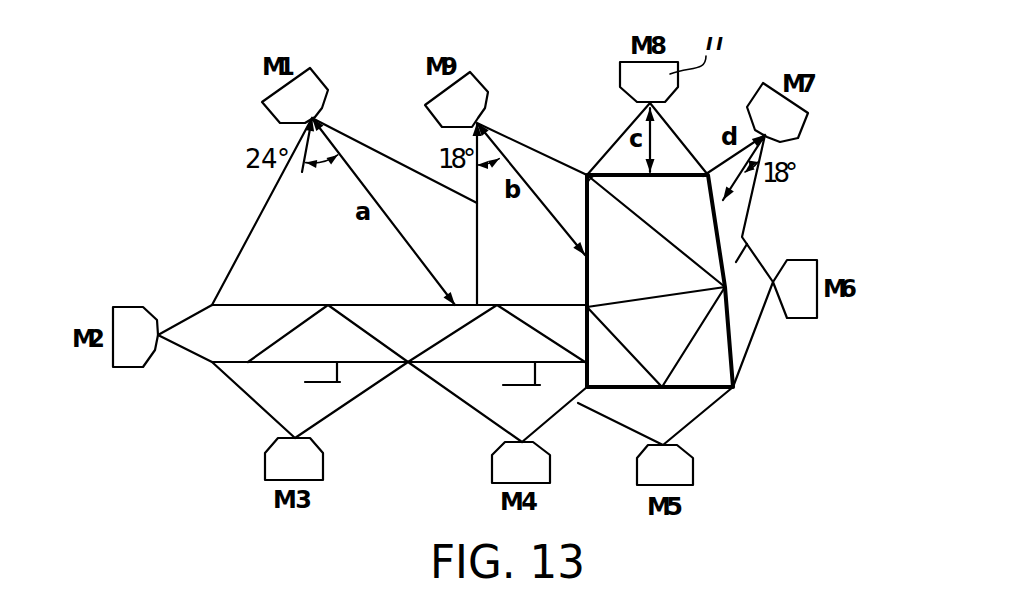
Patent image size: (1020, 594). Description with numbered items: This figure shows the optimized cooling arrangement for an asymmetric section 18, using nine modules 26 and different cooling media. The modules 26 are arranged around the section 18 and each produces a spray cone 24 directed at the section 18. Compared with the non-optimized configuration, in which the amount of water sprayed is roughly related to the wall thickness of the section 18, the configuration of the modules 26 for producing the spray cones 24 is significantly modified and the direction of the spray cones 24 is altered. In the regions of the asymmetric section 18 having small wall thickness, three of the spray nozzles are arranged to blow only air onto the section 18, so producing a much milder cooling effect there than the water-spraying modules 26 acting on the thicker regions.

The section 18 is at (680, 358).
The spray cones 24 is at (743, 250).
The modules 26 is at (792, 123).